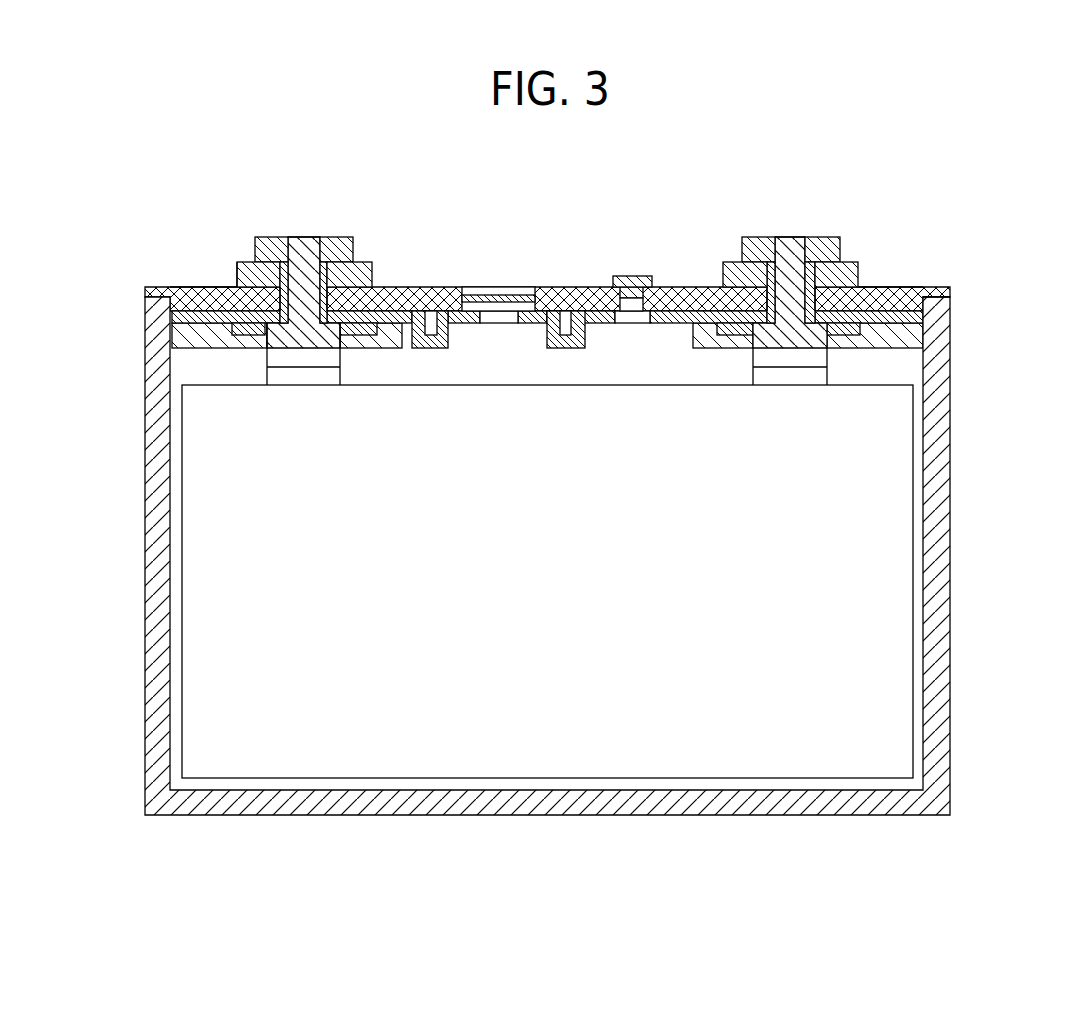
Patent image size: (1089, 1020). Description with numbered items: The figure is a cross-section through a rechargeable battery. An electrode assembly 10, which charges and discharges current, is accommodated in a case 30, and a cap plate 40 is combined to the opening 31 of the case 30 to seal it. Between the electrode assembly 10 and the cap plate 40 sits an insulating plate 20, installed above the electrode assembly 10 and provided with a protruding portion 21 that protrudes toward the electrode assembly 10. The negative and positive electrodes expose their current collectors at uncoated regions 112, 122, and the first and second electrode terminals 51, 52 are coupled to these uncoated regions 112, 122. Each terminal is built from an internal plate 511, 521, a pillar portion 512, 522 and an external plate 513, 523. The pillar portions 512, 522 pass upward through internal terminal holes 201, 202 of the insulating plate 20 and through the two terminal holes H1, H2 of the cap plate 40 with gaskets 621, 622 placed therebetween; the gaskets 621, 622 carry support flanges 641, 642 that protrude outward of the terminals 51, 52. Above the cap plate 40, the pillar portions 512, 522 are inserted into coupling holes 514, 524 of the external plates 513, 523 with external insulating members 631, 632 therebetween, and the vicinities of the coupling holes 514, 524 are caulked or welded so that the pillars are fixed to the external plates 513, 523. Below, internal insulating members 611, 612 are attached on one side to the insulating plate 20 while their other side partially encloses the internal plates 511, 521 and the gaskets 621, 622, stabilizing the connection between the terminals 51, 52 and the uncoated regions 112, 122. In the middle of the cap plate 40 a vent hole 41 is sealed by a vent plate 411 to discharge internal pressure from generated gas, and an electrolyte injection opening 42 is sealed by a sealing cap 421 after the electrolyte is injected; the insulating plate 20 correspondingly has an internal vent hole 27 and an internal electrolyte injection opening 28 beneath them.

The electrode assembly 10 is at (914, 433).
The uncoated region 112 is at (302, 358).
The uncoated region 122 is at (813, 375).
The insulating plate 20 is at (164, 298).
The internal terminal hole 201 is at (322, 330).
The internal terminal hole 202 is at (846, 293).
The protruding portion 21 is at (433, 349).
The internal vent hole 27 is at (498, 322).
The internal electrolyte injection opening 28 is at (627, 322).
The case 30 is at (950, 603).
The opening 31 is at (916, 295).
The cap plate 40 is at (208, 298).
The vent hole 41 is at (480, 290).
The vent plate 411 is at (518, 296).
The electrolyte injection opening 42 is at (633, 306).
The sealing cap 421 is at (633, 278).
The first electrode terminal 51 is at (320, 157).
The internal plate 511 is at (224, 288).
The pillar portion 512 is at (311, 255).
The external plate 513 is at (268, 250).
The coupling hole 514 is at (312, 238).
The second electrode terminal 52 is at (880, 157).
The internal plate 521 is at (854, 265).
The pillar portion 522 is at (795, 256).
The external plate 523 is at (821, 250).
The coupling hole 524 is at (790, 248).
The internal insulating member 611 is at (190, 328).
The internal insulating member 612 is at (907, 333).
The gasket 621 is at (331, 247).
The gasket 622 is at (752, 247).
The external insulating member 631 is at (364, 273).
The external insulating member 632 is at (745, 275).
The support flange 641 is at (240, 336).
The support flange 642 is at (735, 349).
The terminal hole H1 is at (307, 282).
The terminal hole H2 is at (780, 280).